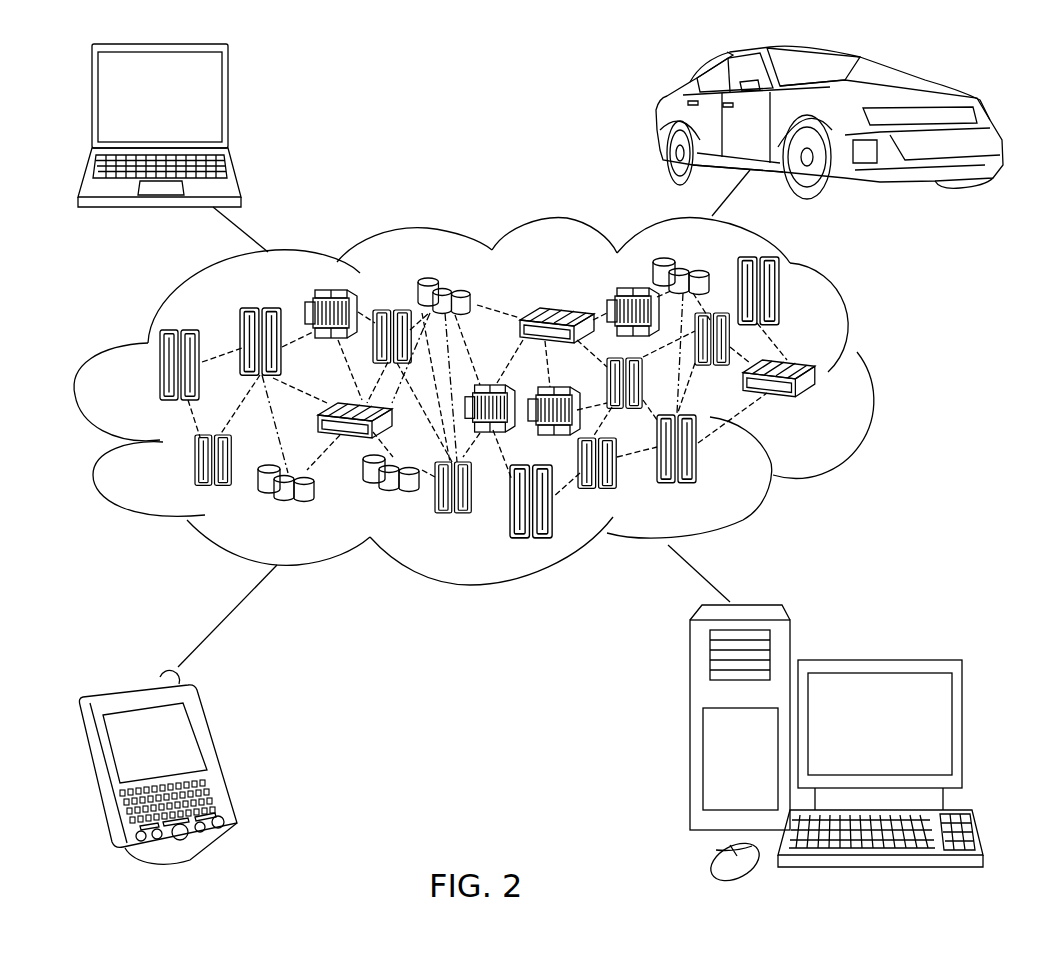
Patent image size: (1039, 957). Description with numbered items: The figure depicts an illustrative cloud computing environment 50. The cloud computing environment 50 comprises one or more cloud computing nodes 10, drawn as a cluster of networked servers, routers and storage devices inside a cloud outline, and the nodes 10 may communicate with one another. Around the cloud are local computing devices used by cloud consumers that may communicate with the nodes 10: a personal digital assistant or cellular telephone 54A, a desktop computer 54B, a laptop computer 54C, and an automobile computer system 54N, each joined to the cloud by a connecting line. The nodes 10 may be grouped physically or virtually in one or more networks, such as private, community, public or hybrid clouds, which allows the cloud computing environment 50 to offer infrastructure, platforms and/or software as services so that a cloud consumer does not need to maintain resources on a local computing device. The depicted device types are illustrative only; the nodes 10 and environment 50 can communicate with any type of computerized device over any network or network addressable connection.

The cloud computing nodes 10 is at (834, 413).
The cloud computing environment 50 is at (878, 376).
The personal digital assistant or cellular telephone 54A is at (220, 753).
The desktop computer 54B is at (877, 660).
The laptop computer 54C is at (229, 106).
The automobile computer system 54N is at (660, 122).